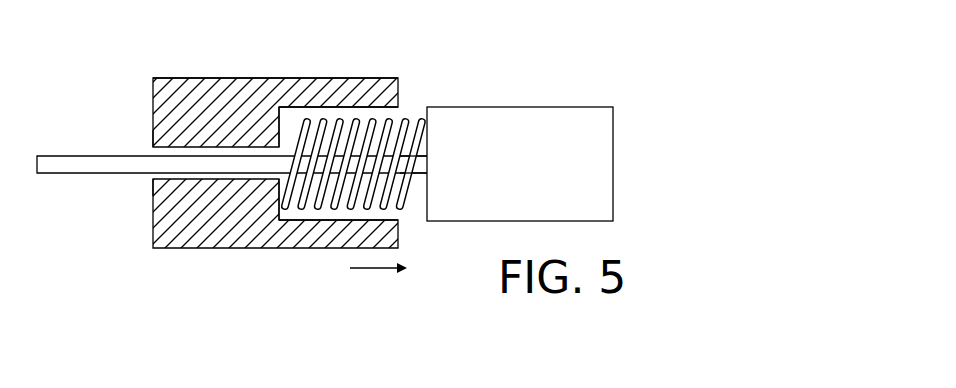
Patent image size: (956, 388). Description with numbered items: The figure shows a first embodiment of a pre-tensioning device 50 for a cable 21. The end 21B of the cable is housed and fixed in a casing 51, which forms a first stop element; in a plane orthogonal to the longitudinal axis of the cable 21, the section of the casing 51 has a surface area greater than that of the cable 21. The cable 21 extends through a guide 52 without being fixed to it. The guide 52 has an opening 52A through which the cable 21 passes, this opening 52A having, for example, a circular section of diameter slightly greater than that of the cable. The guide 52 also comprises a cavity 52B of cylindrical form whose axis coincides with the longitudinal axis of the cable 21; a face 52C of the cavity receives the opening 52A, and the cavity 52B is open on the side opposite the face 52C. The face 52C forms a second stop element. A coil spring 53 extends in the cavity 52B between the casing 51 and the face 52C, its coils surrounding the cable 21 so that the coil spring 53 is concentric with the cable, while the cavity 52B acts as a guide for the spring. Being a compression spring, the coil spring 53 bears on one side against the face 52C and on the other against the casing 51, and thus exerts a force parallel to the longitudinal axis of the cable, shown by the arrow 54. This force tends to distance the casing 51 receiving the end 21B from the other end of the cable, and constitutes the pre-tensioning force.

The cable 21 is at (68, 162).
The end of the cable 21B is at (420, 102).
The pre-tensioning device 50 is at (327, 72).
The casing 51 is at (587, 117).
The guide 52 is at (203, 93).
The opening 52A is at (147, 148).
The cavity 52B is at (302, 215).
The face 52C is at (277, 122).
The coil spring 53 is at (407, 118).
The arrow 54 is at (368, 272).